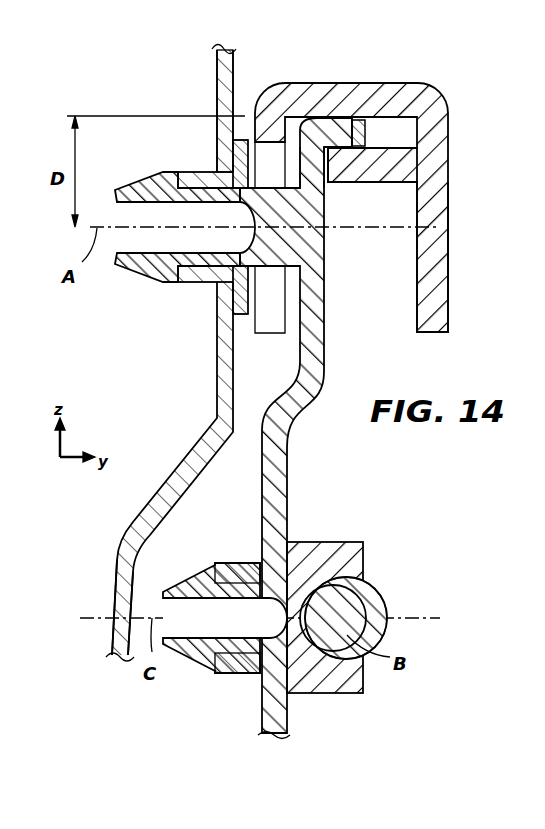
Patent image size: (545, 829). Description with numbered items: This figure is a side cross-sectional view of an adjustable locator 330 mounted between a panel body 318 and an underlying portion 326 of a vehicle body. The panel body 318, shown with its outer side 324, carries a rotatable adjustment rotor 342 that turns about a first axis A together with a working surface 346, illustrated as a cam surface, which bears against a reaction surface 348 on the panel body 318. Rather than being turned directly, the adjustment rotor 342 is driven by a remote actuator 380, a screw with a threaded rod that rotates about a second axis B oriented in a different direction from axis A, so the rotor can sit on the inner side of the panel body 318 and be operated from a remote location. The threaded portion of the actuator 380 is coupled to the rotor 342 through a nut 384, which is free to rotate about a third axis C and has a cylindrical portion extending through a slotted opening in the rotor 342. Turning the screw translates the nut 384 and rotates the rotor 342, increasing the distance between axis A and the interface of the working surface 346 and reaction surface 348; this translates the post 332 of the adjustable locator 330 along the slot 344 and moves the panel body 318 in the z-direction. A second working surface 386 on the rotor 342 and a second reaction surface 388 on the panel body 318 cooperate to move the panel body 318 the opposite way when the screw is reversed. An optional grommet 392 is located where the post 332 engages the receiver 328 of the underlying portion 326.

The panel body 318 is at (282, 86).
The outer side 324 is at (450, 288).
The underlying portion 326 is at (150, 493).
The receiver 328 is at (215, 352).
The adjustable locator 330 is at (364, 110).
The post 332 is at (200, 195).
The adjustment rotor 342 is at (284, 485).
The slot 344 is at (278, 297).
The working surface 346 is at (342, 113).
The reaction surface 348 is at (350, 125).
The remote actuator 380 is at (357, 590).
The nut 384 is at (320, 543).
The second working surface 386 is at (342, 113).
The second reaction surface 388 is at (403, 150).
The grommet 392 is at (203, 288).